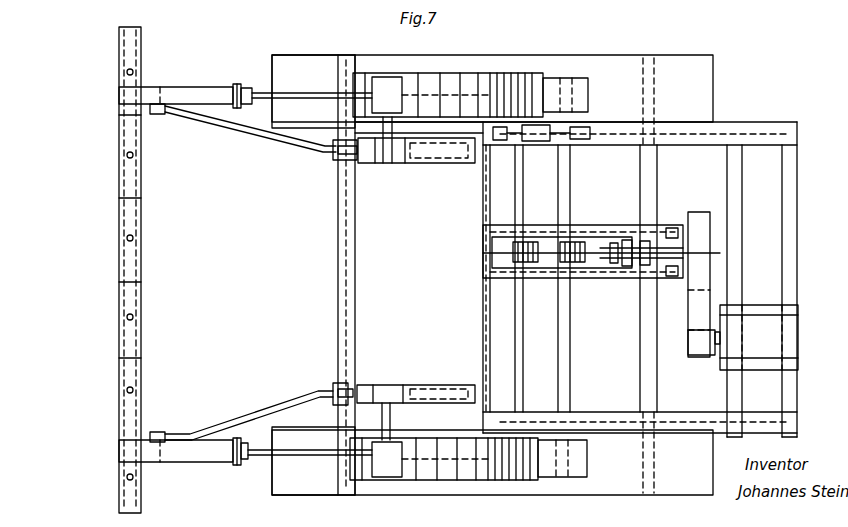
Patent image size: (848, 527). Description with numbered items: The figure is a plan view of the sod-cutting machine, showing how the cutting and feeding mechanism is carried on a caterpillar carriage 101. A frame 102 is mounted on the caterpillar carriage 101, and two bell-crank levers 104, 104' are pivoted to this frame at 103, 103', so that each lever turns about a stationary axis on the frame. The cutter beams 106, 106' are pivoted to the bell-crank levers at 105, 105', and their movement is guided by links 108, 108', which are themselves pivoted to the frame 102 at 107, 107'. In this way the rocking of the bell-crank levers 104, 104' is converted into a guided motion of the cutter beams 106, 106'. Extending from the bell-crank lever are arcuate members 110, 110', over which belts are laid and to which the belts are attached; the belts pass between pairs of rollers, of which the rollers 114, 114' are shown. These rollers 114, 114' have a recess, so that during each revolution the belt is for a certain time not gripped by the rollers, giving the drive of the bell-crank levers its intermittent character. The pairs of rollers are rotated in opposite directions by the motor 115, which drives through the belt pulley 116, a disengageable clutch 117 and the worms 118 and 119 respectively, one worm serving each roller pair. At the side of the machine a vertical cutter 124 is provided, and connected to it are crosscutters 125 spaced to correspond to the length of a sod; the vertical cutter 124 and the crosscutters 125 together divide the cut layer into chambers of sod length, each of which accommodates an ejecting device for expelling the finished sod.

The caterpillar carriage 101 is at (713, 88).
The frame 102 is at (447, 163).
The pivot of bell-crank lever 103 is at (399, 397).
The pivot of bell-crank lever 103' is at (401, 153).
The bell-crank lever 104 is at (313, 471).
The bell-crank lever 104' is at (313, 77).
The pivot of cutter beam 105 is at (230, 470).
The pivot of cutter beam 105' is at (244, 82).
The cutter beam 106 is at (245, 463).
The cutter beam 106' is at (245, 81).
The pivot of link 107 is at (322, 383).
The pivot of link 107' is at (326, 165).
The link 108 is at (241, 410).
The link 108' is at (243, 134).
The arcuate member 110 is at (444, 482).
The arcuate member 110' is at (448, 73).
The roller 114 is at (579, 458).
The roller 114' is at (561, 109).
The motor 115 is at (790, 336).
The belt pulley 116 is at (690, 298).
The disengageable clutch 117 is at (644, 268).
The worm 118 is at (577, 242).
The worm 119 is at (520, 242).
The vertical cutter 124 is at (141, 326).
The crosscutters 125 is at (130, 282).